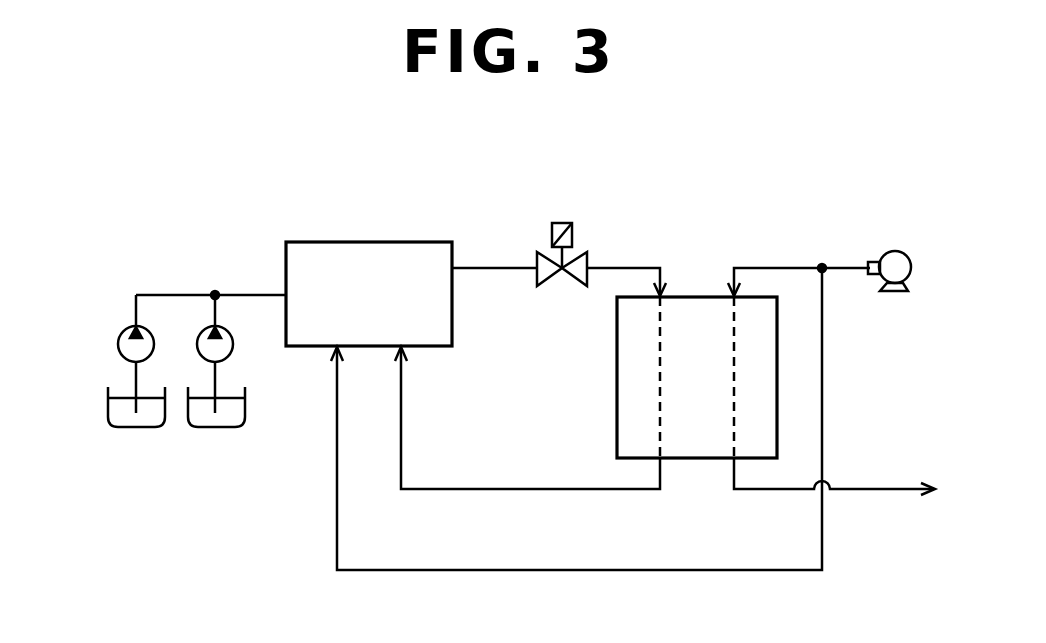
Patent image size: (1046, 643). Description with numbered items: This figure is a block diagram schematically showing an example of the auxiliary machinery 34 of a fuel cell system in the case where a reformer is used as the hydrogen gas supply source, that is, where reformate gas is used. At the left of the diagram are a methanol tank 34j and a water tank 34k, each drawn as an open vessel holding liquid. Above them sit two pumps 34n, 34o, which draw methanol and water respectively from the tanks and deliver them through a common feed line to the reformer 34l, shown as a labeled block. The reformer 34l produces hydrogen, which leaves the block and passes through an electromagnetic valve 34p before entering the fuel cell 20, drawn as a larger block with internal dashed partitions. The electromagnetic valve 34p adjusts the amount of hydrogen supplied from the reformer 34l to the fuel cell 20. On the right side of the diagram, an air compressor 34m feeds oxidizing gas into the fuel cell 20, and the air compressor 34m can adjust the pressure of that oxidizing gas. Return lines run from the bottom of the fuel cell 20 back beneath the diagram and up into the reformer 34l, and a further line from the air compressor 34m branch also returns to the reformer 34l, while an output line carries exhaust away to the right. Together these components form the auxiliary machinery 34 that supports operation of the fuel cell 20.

The auxiliary machinery 34 is at (768, 196).
The pump 34n is at (126, 331).
The pump 34o is at (233, 345).
The methanol tank 34j is at (143, 427).
The water tank 34k is at (222, 427).
The reformer 34l is at (452, 334).
The electromagnetic valve 34p is at (572, 233).
The fuel cell 20 is at (617, 378).
The air compressor 34m is at (893, 291).